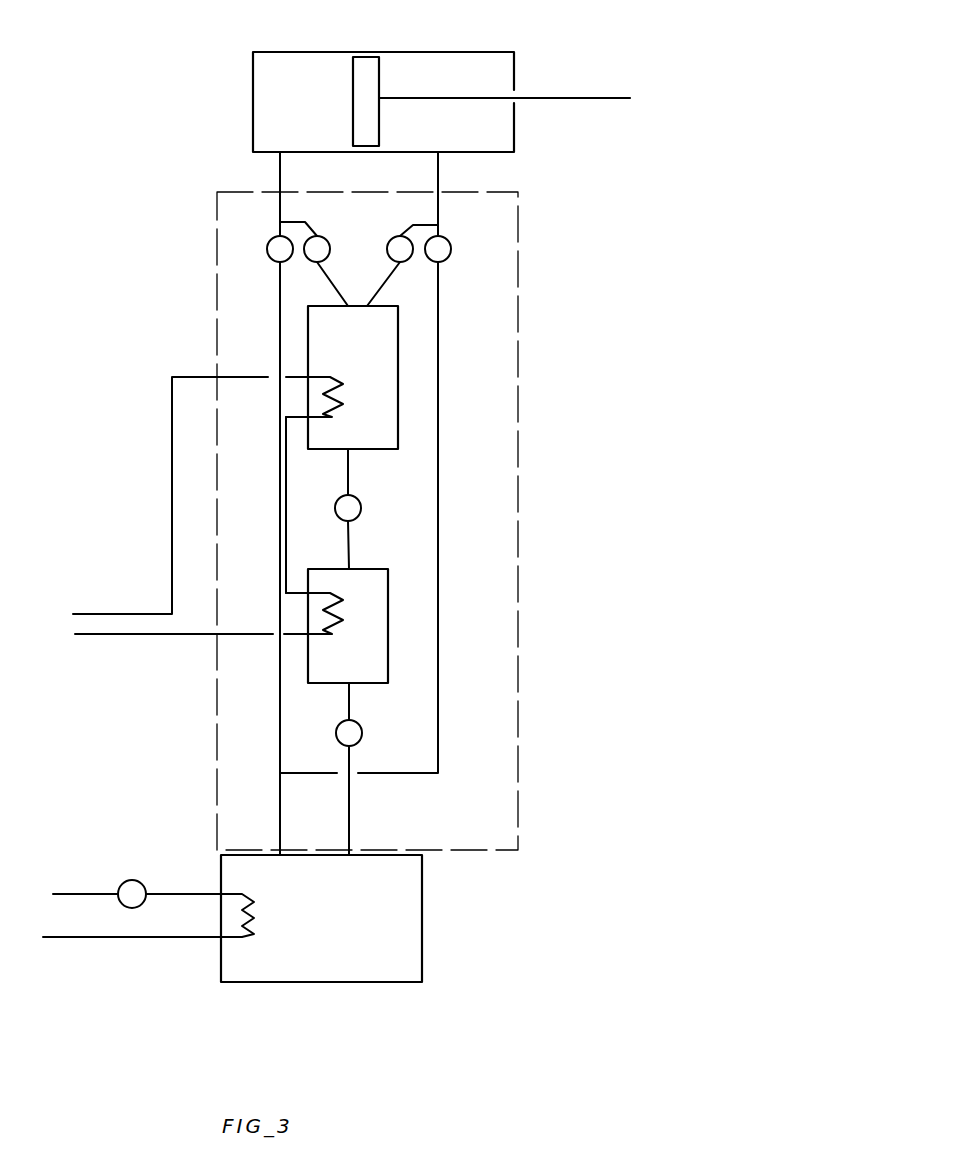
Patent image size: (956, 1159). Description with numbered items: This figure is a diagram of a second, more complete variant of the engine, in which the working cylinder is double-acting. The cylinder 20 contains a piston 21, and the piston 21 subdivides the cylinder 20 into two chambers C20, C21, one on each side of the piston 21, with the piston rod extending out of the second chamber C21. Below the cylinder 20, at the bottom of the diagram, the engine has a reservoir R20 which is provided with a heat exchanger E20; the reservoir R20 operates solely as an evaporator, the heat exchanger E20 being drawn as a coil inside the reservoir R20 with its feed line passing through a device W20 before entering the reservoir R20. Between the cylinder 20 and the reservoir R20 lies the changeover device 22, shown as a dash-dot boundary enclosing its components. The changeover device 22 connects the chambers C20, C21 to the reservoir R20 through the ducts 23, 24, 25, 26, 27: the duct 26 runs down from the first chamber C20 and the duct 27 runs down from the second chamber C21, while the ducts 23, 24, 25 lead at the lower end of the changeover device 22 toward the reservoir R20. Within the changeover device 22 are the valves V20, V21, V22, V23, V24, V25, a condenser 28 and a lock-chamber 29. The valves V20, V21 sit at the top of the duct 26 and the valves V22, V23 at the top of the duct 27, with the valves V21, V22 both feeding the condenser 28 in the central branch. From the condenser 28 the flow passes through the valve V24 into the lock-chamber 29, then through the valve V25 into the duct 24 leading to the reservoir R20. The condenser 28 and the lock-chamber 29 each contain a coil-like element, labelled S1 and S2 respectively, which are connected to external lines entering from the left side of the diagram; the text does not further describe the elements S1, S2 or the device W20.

The cylinder 20 is at (388, 81).
The chamber C20 is at (277, 85).
The chamber C21 is at (473, 70).
The piston 21 is at (375, 75).
The changeover device 22 is at (508, 508).
The duct 23 is at (280, 728).
The duct 24 is at (355, 748).
The duct 25 is at (438, 738).
The duct 26 is at (281, 165).
The duct 27 is at (439, 168).
The condenser 28 is at (398, 373).
The lock-chamber 29 is at (388, 622).
The valve V20 is at (266, 250).
The valve V21 is at (342, 243).
The valve V22 is at (391, 240).
The valve V23 is at (464, 248).
The valve V24 is at (360, 502).
The valve V25 is at (368, 716).
The heating coil S1 is at (325, 397).
The heating coil S2 is at (324, 613).
The valve W20 is at (120, 886).
The heat exchanger E20 is at (232, 916).
The reservoir R20 is at (292, 972).